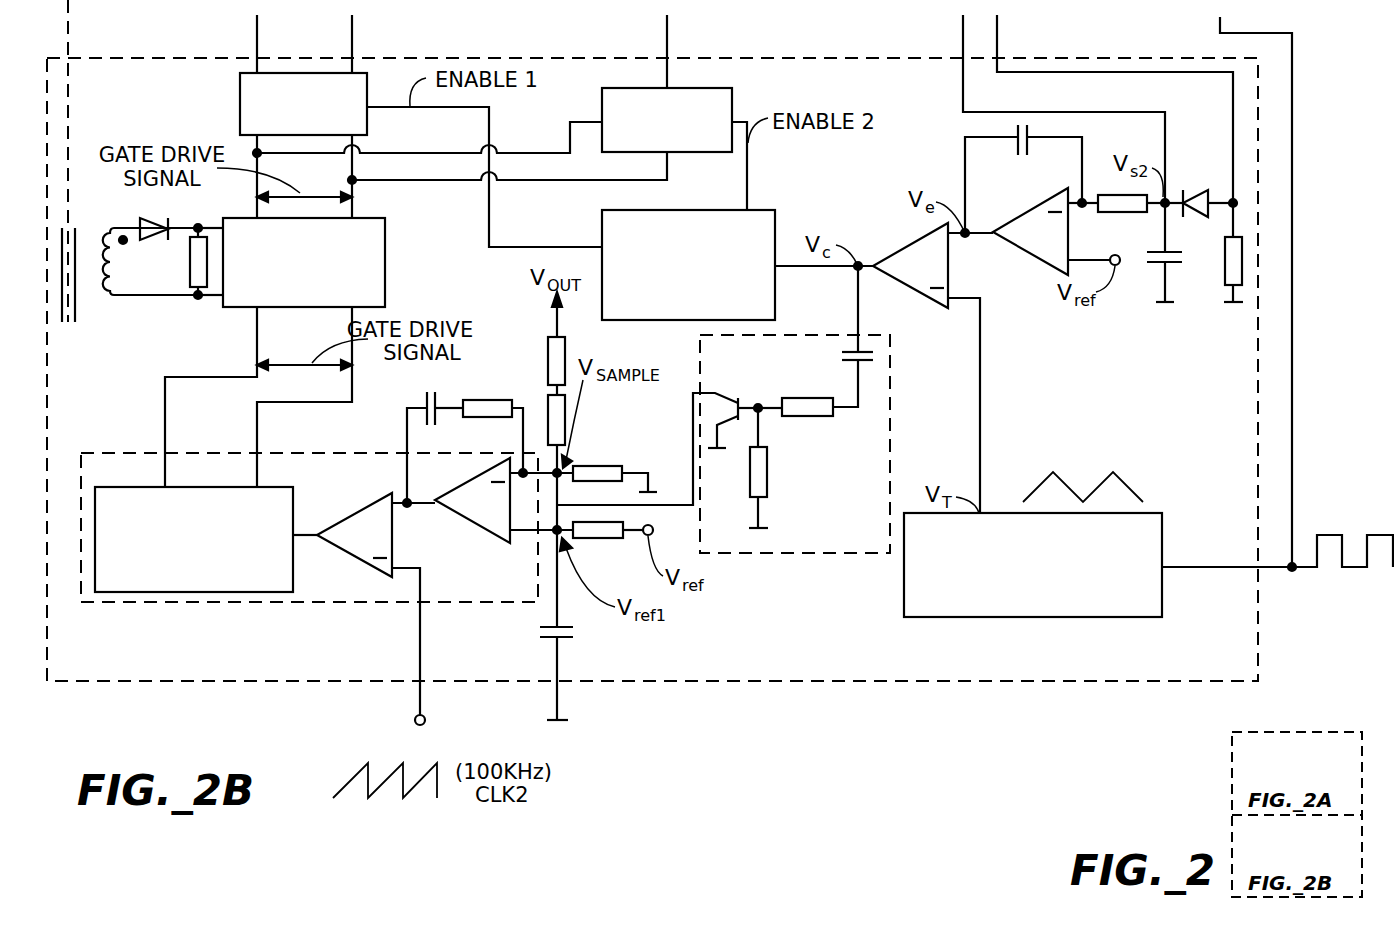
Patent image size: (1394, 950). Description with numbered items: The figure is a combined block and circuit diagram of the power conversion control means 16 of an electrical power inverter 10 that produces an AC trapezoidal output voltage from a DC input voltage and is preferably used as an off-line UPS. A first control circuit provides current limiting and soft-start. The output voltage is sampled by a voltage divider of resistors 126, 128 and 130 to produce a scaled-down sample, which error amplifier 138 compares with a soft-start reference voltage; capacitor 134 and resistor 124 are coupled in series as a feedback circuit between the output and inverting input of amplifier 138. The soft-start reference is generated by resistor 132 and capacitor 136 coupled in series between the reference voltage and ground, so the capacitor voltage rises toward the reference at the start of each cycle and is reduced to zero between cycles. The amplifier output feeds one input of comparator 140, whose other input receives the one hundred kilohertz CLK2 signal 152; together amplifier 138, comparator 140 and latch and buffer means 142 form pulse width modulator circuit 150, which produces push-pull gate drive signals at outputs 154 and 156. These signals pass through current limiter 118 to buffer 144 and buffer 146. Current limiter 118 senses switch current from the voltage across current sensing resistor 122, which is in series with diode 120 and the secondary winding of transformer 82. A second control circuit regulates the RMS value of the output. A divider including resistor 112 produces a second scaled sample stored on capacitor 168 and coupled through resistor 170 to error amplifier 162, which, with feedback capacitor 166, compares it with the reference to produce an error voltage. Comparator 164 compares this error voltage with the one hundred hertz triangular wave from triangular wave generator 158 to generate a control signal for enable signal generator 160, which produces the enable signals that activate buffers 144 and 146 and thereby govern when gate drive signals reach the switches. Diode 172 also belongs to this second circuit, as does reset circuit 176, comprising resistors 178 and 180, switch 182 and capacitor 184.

The electrical power inverter 10 is at (1299, 610).
The power conversion control means 16 is at (995, 618).
The transformer 82 is at (104, 292).
The resistor 112 is at (1225, 268).
The current limiter 118 is at (287, 302).
The diode 120 is at (140, 222).
The current sensing resistor 122 is at (188, 256).
The resistor 124 is at (490, 400).
The resistor 126 is at (547, 350).
The resistor 128 is at (547, 403).
The resistor 130 is at (592, 466).
The resistor 132 is at (592, 540).
The capacitor 134 is at (427, 400).
The capacitor 136 is at (565, 640).
The error amplifier 138 is at (488, 538).
The comparator 140 is at (363, 565).
The latch and buffer means 142 is at (177, 582).
The buffer 144 is at (286, 131).
The buffer 146 is at (650, 146).
The pulse width modulator circuit 150 is at (233, 605).
The CLK2 signal 152 is at (423, 726).
The output 154 is at (165, 453).
The output 156 is at (257, 453).
The triangular wave generator 158 is at (1016, 607).
The enable signal generator 160 is at (671, 313).
The error amplifier 162 is at (1023, 257).
The comparator 164 is at (907, 243).
The capacitor 166 is at (1037, 152).
The capacitor 168 is at (1152, 268).
The resistor 170 is at (1102, 195).
The diode 172 is at (1203, 190).
The reset circuit 176 is at (803, 553).
The resistor 178 is at (767, 470).
The resistor 180 is at (812, 417).
The switch 182 is at (722, 391).
The capacitor 184 is at (862, 350).